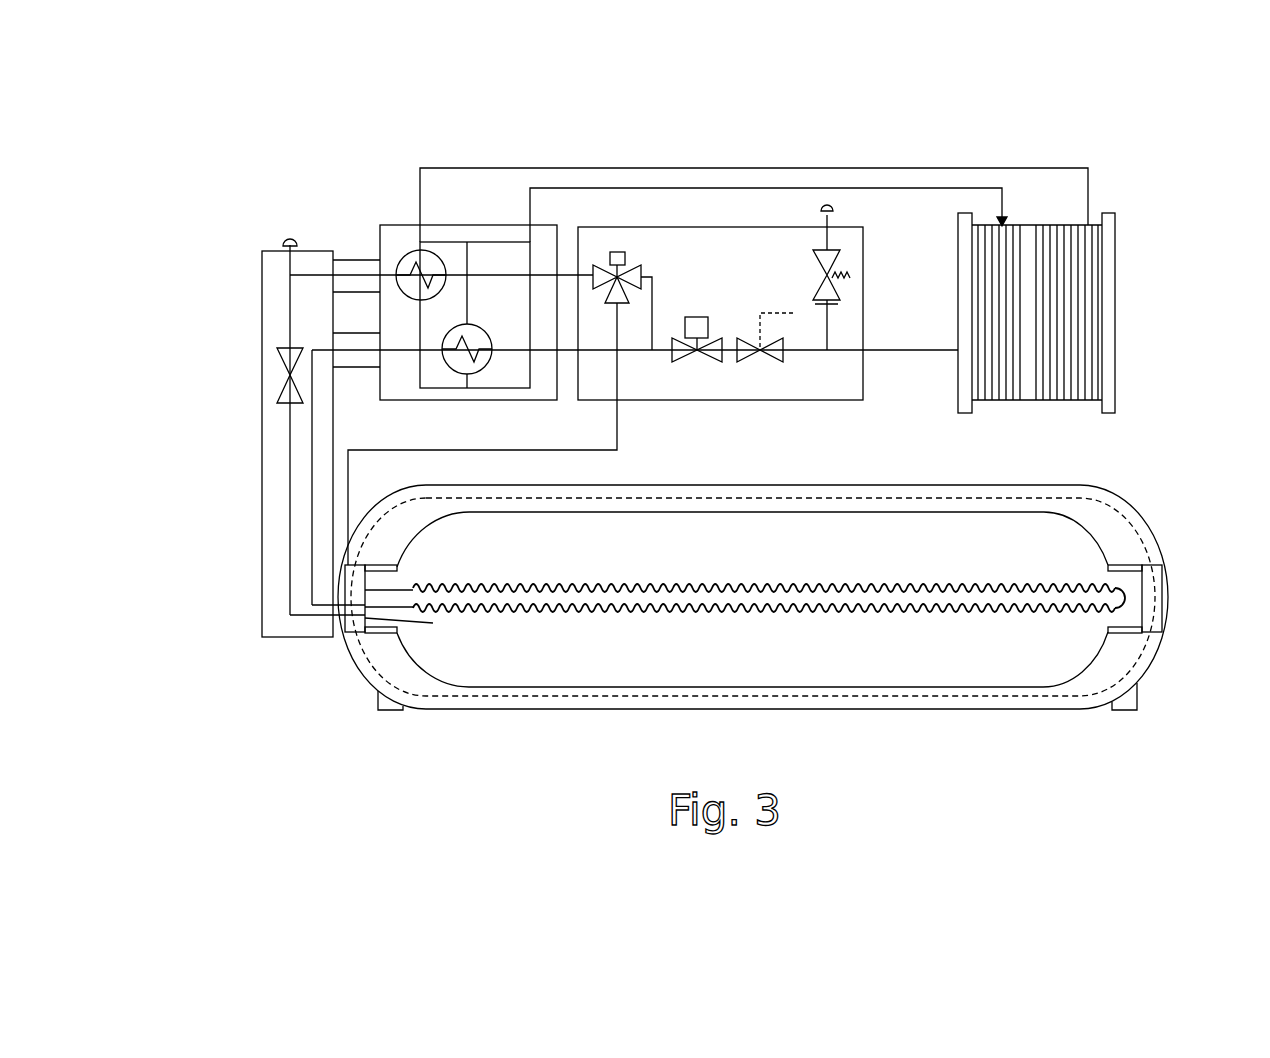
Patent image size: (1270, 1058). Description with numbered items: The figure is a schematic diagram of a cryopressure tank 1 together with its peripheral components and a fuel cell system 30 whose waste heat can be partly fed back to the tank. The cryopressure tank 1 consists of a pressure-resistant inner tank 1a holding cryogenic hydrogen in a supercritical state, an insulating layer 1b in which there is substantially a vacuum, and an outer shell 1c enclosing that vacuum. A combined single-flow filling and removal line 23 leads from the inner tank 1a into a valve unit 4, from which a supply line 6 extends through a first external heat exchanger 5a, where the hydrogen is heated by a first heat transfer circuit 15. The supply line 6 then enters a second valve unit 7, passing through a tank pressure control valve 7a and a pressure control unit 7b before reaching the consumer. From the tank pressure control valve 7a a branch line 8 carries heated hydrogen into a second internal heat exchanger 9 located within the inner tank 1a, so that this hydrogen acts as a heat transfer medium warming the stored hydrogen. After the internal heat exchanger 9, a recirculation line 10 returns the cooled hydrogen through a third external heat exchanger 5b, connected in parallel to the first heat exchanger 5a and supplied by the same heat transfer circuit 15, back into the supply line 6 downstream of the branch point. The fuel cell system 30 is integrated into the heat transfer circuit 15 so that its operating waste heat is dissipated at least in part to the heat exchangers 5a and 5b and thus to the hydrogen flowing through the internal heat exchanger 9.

The cryopressure tank 1 is at (799, 559).
The inner tank 1a is at (1060, 527).
The insulating layer 1b is at (1107, 528).
The outer shell 1c is at (1165, 538).
The valve unit 4 is at (262, 310).
The first external heat exchanger 5a is at (417, 250).
The third external heat exchanger 5b is at (470, 343).
The supply line 6 is at (357, 272).
The second valve unit 7 is at (707, 253).
The tank pressure control valve 7a is at (607, 257).
The pressure control unit 7b is at (732, 356).
The branch line 8 is at (627, 427).
The second internal heat exchanger 9 is at (800, 592).
The recirculation line 10 is at (317, 412).
The first heat transfer circuit 15 is at (900, 168).
The filling and removal line 23 is at (288, 563).
The fuel cell system 30 is at (1068, 293).